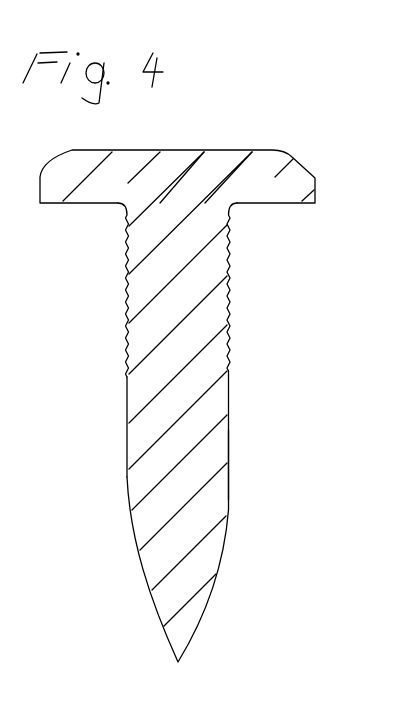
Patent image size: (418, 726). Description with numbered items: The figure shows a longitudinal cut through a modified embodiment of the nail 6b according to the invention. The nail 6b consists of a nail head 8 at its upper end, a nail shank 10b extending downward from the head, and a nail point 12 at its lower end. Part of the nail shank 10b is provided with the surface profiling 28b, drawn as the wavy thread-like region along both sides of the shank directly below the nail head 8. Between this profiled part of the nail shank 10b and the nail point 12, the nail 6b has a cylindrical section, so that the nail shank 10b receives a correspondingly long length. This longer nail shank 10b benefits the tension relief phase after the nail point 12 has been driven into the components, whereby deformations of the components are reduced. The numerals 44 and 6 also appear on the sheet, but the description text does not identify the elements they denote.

The nail head 8 is at (213, 167).
The surface profiling 28b is at (332, 243).
The nail shank 10b is at (193, 382).
The smooth shank portion 44 is at (229, 432).
The nail point 12 is at (190, 533).
The nail 6b is at (281, 355).
The fastening element 6 is at (417, 402).